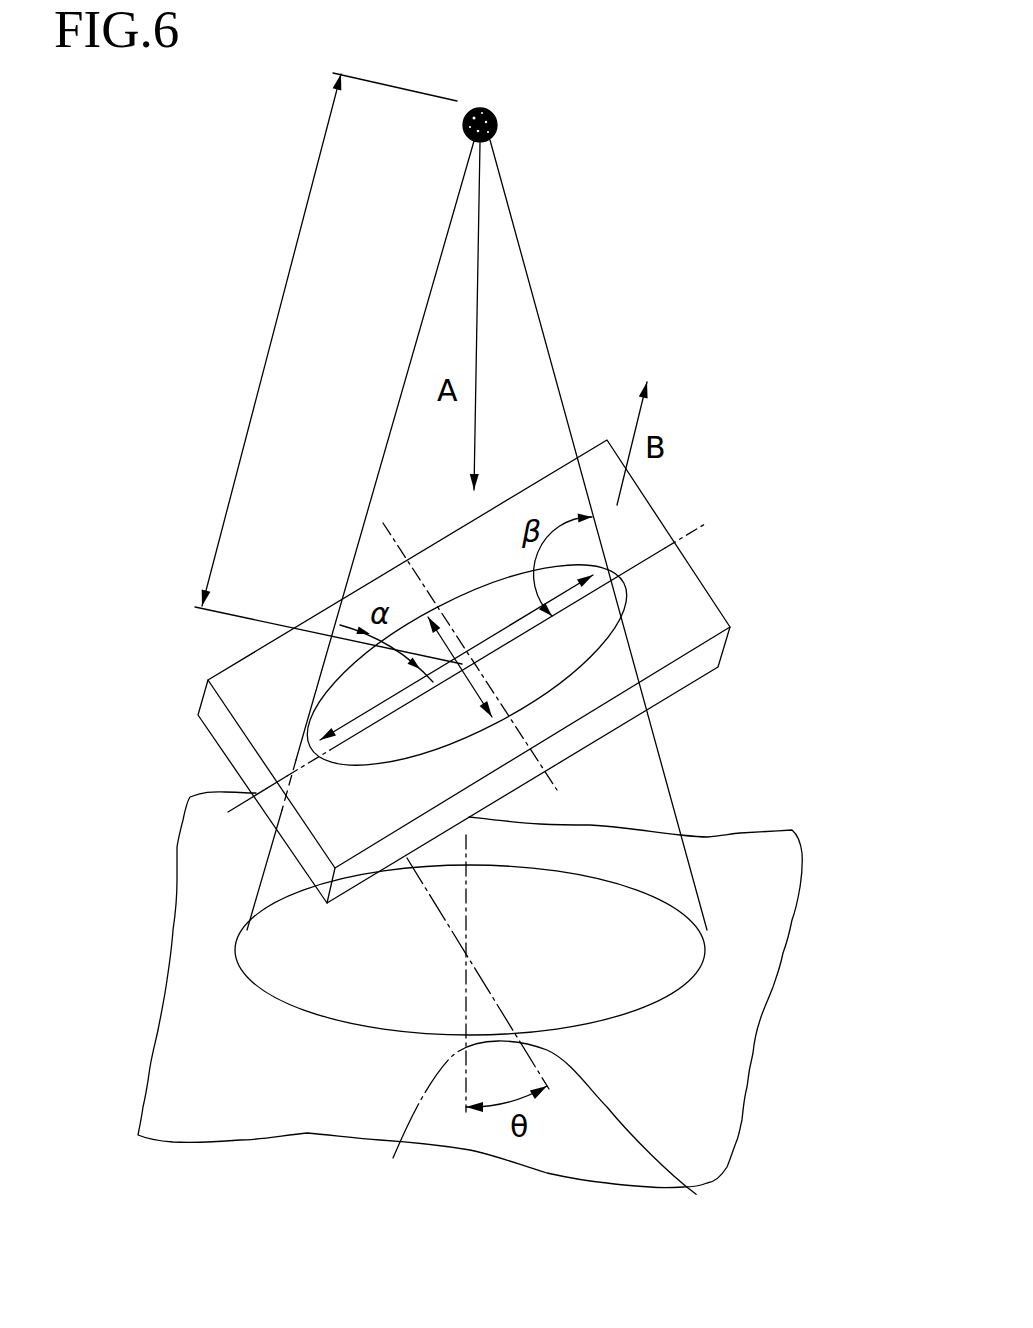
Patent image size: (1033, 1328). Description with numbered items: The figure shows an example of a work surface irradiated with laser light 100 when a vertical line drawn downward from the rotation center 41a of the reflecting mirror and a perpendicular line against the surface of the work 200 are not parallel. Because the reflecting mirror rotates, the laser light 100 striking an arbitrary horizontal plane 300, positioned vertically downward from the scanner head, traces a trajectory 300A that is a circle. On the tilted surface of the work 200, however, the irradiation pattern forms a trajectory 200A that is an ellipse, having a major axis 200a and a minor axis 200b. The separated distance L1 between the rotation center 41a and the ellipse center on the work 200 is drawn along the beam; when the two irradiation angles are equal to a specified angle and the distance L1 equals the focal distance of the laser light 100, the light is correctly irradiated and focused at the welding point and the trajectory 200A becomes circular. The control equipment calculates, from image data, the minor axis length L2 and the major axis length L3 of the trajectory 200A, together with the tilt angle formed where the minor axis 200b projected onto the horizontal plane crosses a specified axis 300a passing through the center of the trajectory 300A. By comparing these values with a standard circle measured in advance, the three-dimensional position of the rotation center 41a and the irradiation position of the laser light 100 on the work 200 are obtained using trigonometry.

The rotation center 41a is at (497, 122).
The laser light 100 is at (545, 345).
The work 200 is at (513, 671).
The trajectory 200A is at (627, 617).
The major axis 200a is at (684, 533).
The minor axis 200b is at (383, 523).
The horizontal plane 300 is at (727, 1063).
The trajectory 300A is at (265, 995).
The specified axis 300a is at (527, 1118).
The distance L1 is at (328, 368).
The minor axis length L2 is at (467, 680).
The major axis length L3 is at (390, 705).